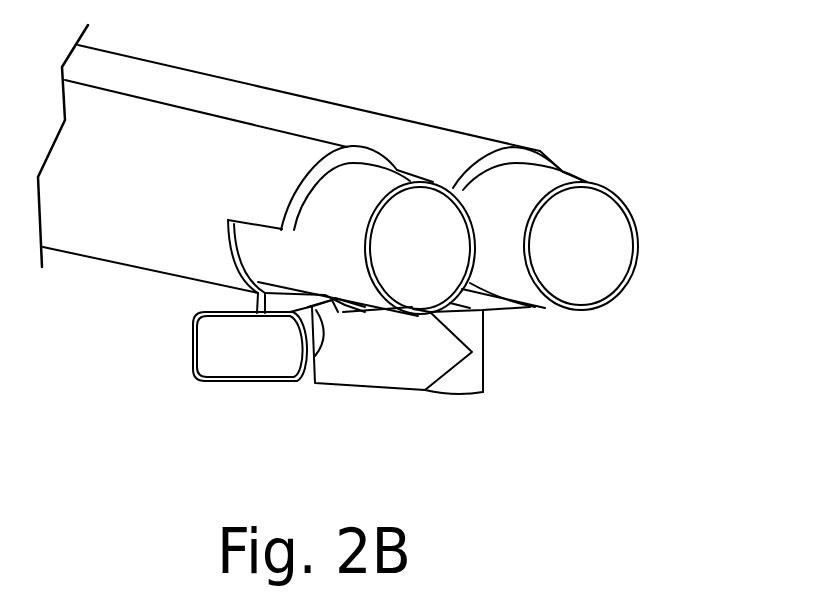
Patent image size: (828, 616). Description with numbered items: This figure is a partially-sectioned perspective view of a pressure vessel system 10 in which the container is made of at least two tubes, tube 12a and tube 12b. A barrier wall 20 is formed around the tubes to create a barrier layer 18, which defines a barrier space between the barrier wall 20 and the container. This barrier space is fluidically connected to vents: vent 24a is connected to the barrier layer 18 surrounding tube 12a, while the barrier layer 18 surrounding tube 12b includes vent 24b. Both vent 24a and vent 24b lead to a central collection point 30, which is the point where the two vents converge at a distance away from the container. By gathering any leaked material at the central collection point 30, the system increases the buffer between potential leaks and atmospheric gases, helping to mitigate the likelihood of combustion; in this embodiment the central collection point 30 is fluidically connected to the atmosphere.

The pressure vessel system 10 is at (614, 108).
The tube 12a is at (438, 258).
The tube 12b is at (603, 258).
The barrier layer 18 is at (530, 157).
The barrier wall 20 is at (442, 152).
The vent 24a is at (295, 303).
The vent 24b is at (470, 315).
The central collection point 30 is at (227, 343).